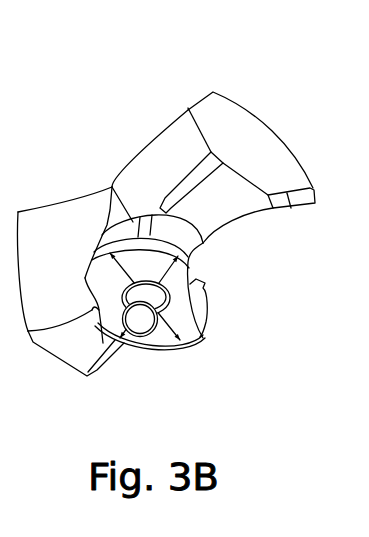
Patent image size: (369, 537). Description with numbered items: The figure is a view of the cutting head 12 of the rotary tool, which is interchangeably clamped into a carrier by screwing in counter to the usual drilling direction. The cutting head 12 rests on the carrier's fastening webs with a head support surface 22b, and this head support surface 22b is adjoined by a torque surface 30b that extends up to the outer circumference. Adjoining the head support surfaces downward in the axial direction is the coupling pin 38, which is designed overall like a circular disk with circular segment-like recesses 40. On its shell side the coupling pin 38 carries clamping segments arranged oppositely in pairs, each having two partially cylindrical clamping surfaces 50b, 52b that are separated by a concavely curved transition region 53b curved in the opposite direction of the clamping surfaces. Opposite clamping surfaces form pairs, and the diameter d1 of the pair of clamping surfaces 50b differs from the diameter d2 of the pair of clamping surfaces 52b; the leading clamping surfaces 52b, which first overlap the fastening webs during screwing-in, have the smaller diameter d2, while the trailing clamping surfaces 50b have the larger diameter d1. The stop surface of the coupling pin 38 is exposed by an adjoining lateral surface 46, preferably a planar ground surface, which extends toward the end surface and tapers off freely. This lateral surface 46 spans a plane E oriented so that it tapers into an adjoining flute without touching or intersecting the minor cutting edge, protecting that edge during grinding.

The cutting head 12 is at (280, 89).
The torque surface 30b is at (182, 123).
The lateral surface 46 is at (180, 194).
The plane E is at (122, 204).
The clamping surface 52b is at (119, 193).
The transition region 53b is at (150, 217).
The coupling pin 38 is at (106, 264).
The recess 40 is at (97, 320).
The head support surface 22b is at (245, 210).
The clamping surface 50b is at (204, 245).
The diameter d2 is at (202, 342).
The diameter d1 is at (137, 337).